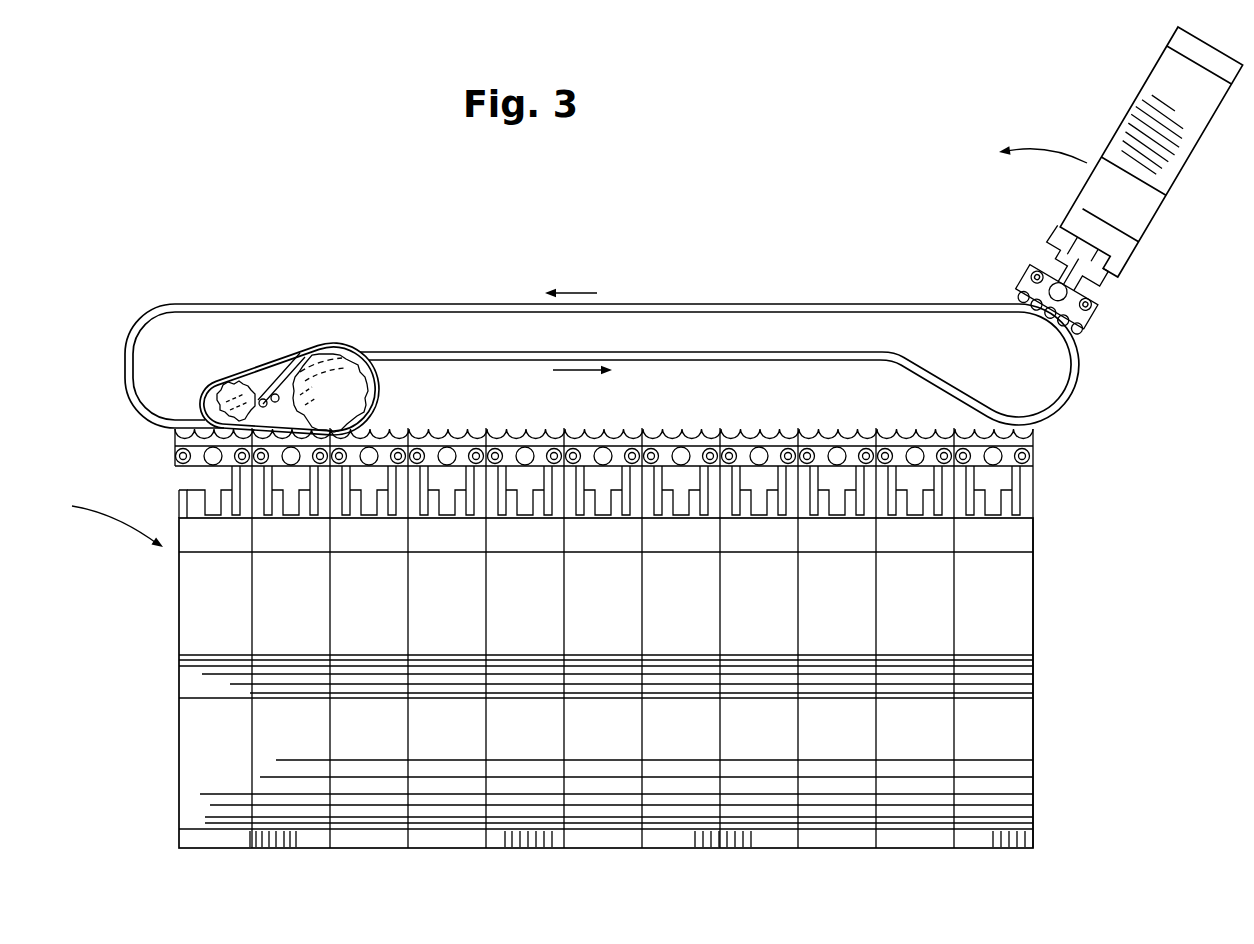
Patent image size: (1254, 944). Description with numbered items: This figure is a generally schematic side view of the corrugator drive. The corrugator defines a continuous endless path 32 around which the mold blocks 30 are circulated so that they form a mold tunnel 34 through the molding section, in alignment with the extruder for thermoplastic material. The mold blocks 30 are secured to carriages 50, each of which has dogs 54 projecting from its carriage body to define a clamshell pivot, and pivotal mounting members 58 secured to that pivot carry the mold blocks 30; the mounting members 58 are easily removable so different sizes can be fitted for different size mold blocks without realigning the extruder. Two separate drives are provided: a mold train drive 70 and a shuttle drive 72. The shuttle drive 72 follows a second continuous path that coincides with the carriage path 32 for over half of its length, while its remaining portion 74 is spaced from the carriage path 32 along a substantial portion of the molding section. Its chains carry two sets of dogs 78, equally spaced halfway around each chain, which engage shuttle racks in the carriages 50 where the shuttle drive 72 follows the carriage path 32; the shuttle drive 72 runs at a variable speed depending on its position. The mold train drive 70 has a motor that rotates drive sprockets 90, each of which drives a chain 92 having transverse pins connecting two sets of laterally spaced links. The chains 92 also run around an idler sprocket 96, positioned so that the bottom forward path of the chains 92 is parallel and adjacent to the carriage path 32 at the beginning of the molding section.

The mold blocks 30 is at (764, 384).
The continuous endless path 32 is at (348, 302).
The mold tunnel 34 is at (174, 759).
The carriages 50 is at (508, 456).
The dogs 54 is at (1020, 483).
The pivotal mounting members 58 is at (308, 607).
The mold train drive 70 is at (382, 403).
The shuttle drive 72 is at (458, 301).
The remaining portion of the second continuous path 74 is at (516, 361).
The dogs 78 is at (275, 416).
The drive sprockets 90 is at (345, 402).
The chain 92 is at (277, 350).
The idler sprocket 96 is at (226, 396).